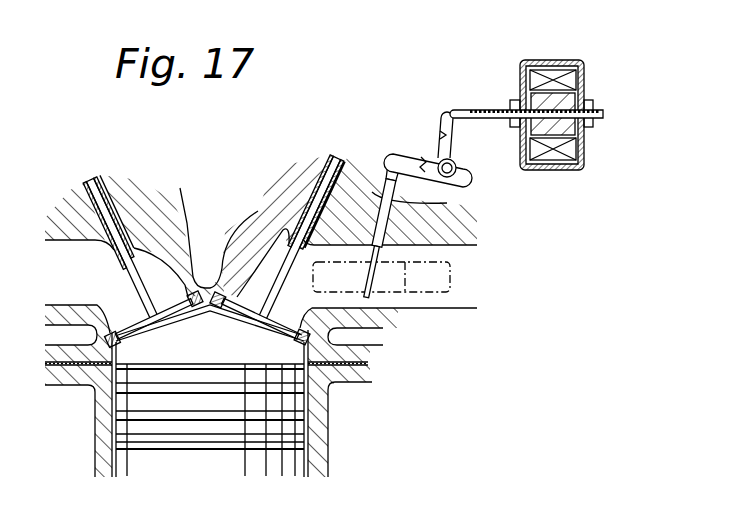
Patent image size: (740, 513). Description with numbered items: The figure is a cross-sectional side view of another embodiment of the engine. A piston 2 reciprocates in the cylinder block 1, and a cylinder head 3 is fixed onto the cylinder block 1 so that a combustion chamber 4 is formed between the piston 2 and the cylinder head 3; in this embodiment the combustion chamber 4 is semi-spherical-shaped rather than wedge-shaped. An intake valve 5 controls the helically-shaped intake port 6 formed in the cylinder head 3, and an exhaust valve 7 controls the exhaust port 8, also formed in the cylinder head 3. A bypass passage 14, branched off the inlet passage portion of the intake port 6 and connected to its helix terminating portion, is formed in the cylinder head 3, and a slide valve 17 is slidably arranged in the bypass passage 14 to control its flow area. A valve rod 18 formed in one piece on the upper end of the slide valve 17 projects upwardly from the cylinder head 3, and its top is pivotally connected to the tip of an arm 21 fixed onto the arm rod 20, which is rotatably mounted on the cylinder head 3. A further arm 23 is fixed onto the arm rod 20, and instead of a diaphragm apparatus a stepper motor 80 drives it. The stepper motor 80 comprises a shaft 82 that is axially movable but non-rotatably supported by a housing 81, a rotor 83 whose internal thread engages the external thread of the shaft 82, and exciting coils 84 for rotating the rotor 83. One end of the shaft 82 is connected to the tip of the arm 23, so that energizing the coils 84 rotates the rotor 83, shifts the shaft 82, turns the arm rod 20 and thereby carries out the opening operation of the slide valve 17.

The cylinder block 1 is at (96, 432).
The piston 2 is at (142, 458).
The cylinder head 3 is at (130, 217).
The combustion chamber 4 is at (212, 347).
The intake valve 5 is at (262, 228).
The intake port 6 is at (443, 309).
The exhaust valve 7 is at (162, 266).
The exhaust port 8 is at (68, 286).
The bypass passage 14 is at (397, 285).
The slide valve 17 is at (382, 270).
The valve rod 18 is at (372, 192).
The arm rod 20 is at (458, 176).
The arm 21 is at (413, 156).
The arm 23 is at (458, 132).
The stepper motor 80 is at (534, 120).
The housing 81 is at (583, 170).
The shaft 82 is at (452, 108).
The rotor 83 is at (583, 127).
The exciting coils 84 is at (550, 170).